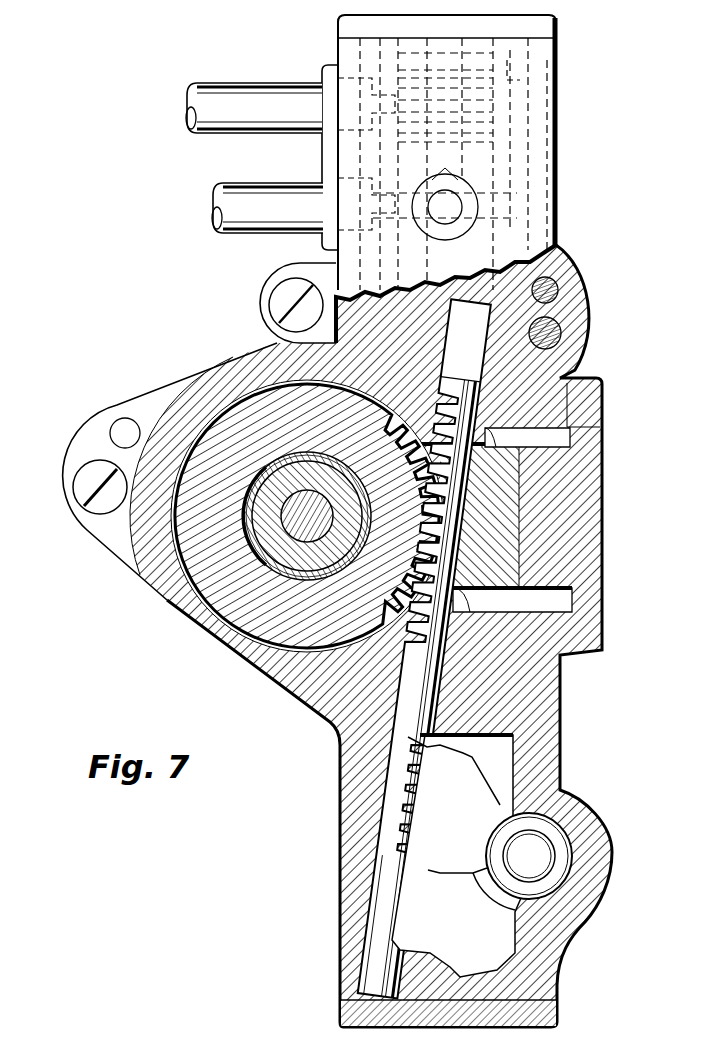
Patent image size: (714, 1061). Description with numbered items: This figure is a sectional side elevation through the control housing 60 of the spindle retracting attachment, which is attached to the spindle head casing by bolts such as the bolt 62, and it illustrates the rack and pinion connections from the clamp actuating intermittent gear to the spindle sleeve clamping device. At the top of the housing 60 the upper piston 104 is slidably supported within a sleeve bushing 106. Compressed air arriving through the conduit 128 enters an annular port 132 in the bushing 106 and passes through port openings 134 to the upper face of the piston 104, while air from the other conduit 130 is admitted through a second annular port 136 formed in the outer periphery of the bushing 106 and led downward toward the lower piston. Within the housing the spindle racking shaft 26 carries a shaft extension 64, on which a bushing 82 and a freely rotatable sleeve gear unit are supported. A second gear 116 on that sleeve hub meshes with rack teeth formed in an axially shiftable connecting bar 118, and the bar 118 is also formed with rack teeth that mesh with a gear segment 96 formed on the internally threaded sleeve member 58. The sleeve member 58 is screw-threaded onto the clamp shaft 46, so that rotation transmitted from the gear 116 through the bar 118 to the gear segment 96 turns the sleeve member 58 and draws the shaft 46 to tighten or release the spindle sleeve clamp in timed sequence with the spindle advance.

The spindle racking shaft 26 is at (192, 594).
The shaft 46 is at (545, 856).
The internally threaded sleeve member 58 is at (572, 822).
The housing 60 is at (558, 247).
The bolt 62 is at (82, 488).
The shaft extension 64 is at (278, 530).
The bushing 82 is at (296, 560).
The gear segment 96 is at (431, 872).
The piston 104 is at (495, 167).
The sleeve bushing 106 is at (517, 143).
The second gear 116 is at (440, 503).
The connecting bar 118 is at (443, 583).
The conduit 128 is at (240, 79).
The conduit 130 is at (265, 190).
The annular port 132 is at (365, 95).
The port openings 134 is at (509, 60).
The annular port 136 is at (508, 209).